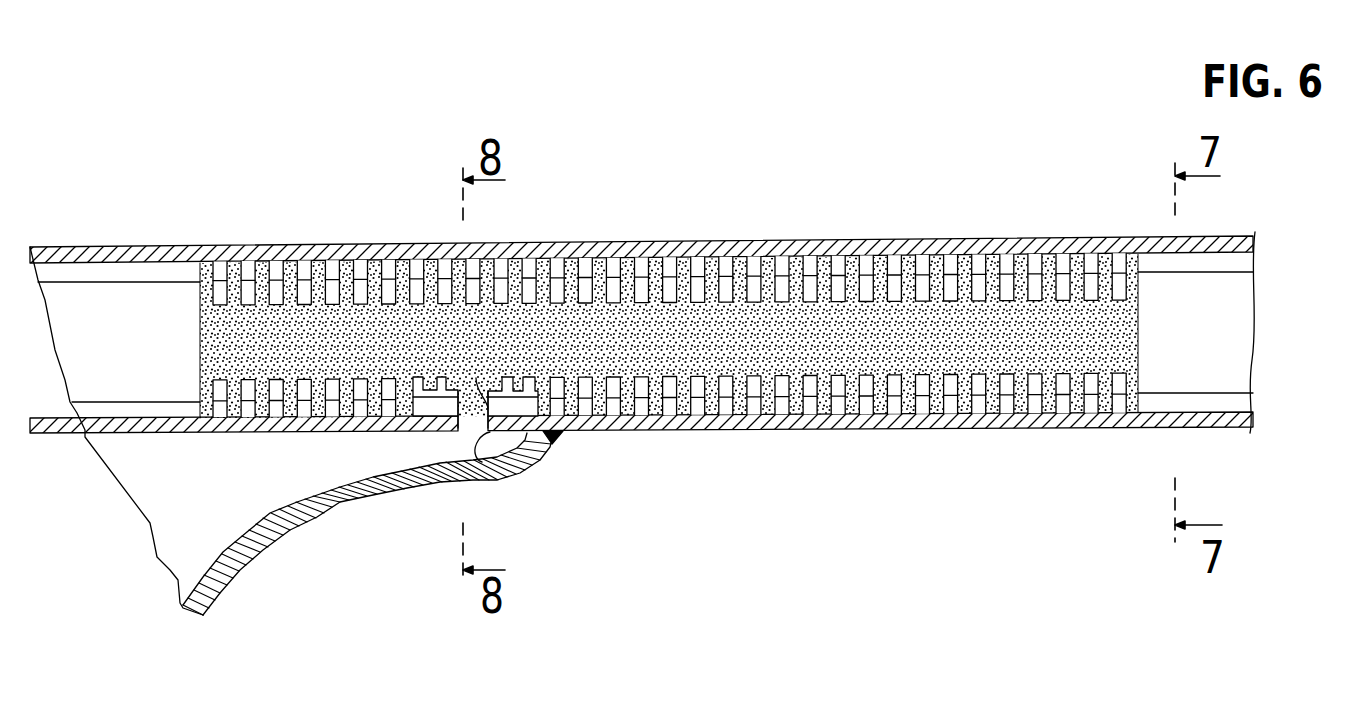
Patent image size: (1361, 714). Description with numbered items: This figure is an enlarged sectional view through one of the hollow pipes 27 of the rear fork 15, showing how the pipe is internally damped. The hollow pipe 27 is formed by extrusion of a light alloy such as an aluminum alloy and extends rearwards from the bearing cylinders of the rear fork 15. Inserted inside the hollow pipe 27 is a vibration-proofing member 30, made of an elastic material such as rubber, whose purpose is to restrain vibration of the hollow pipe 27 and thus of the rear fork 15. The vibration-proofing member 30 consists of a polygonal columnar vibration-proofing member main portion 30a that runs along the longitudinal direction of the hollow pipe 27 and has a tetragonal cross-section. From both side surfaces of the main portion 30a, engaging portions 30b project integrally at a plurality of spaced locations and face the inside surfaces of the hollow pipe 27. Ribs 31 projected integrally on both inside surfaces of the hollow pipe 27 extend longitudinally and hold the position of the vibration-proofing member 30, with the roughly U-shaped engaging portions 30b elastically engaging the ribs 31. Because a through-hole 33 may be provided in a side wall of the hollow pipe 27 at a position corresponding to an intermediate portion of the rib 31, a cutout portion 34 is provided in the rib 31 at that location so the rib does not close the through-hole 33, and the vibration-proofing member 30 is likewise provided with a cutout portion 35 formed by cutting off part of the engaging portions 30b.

The rear fork 15 is at (969, 232).
The hollow pipe 27 is at (729, 241).
The vibration-proofing member 30 is at (628, 334).
The vibration-proofing member main portion 30a is at (211, 333).
The engaging portions 30b is at (272, 261).
The ribs 31 is at (1195, 402).
The through-hole 33 is at (500, 482).
The cutout portion 34 is at (458, 418).
The cutout portion 35 is at (441, 432).